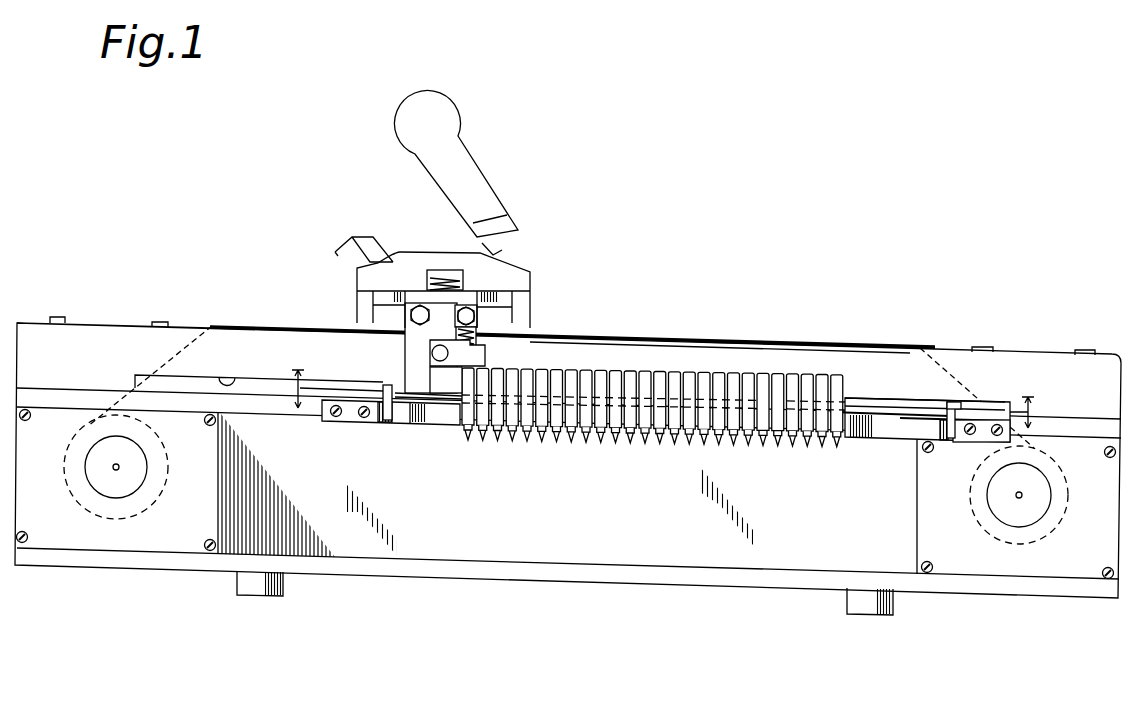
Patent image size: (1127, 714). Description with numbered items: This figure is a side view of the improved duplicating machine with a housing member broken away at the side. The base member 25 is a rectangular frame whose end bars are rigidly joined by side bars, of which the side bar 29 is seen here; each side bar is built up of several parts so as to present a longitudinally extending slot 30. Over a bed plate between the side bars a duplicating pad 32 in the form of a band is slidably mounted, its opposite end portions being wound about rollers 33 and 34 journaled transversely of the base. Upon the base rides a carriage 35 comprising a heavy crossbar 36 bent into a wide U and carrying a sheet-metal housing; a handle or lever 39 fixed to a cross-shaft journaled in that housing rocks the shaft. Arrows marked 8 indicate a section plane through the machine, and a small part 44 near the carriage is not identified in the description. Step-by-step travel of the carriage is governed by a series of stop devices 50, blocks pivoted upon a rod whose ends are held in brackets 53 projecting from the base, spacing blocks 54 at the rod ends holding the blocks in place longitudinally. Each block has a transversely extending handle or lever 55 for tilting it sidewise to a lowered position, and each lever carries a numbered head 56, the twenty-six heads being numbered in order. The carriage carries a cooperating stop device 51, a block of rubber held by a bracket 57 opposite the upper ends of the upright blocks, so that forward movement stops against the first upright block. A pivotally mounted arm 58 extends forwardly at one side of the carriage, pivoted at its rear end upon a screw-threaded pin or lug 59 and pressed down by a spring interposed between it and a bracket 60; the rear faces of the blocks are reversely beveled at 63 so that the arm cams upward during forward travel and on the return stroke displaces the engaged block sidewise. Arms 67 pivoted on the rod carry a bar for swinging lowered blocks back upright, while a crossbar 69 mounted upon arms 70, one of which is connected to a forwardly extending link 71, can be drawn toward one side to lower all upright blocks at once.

The section line 8- 8 is at (664, 399).
The base member 25 is at (123, 322).
The side bar 29 is at (862, 360).
The longitudinally extending slot 30 is at (227, 378).
The duplicating pad 32 is at (240, 327).
The roller 33 is at (135, 490).
The roller 34 is at (1040, 507).
The carriage 35 is at (542, 284).
The crossbar 36 is at (407, 354).
The handle or lever 39 is at (478, 178).
The latch lever 44 is at (378, 243).
The stop devices 50 is at (715, 380).
The stop device 51 is at (447, 383).
The brackets 53 is at (352, 418).
The spacing blocks 54 is at (448, 418).
The handle or lever 55 is at (542, 442).
The numbered head 56 is at (670, 448).
The bracket 57 is at (430, 378).
The pivotally mounted arm 58 is at (490, 355).
The screw-threaded pin or lug 59 is at (433, 348).
The bracket 60 is at (480, 318).
The reverse bevel 63 is at (772, 380).
The arms 67 is at (388, 422).
The crossbar 69 is at (860, 410).
The arms 70 is at (385, 393).
The link 71 is at (970, 434).